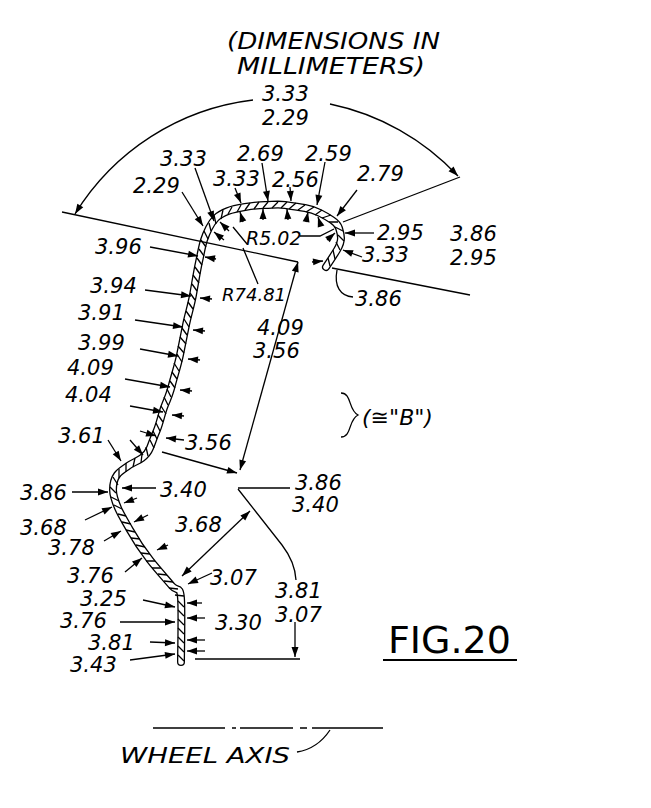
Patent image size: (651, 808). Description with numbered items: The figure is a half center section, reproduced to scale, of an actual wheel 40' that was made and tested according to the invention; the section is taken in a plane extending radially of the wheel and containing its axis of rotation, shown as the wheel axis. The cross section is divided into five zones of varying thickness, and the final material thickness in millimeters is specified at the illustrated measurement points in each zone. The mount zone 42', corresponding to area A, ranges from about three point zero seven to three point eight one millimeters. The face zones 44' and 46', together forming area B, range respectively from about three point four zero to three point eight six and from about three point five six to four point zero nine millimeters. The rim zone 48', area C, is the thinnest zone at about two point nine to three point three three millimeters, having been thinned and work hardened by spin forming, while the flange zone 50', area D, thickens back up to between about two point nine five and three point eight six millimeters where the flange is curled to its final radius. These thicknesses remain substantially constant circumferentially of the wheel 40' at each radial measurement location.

The wheel 40' is at (194, 432).
The mount zone 42' is at (307, 574).
The face zone 44' is at (248, 454).
The face zone 46' is at (287, 366).
The rim zone 48' is at (261, 163).
The flange zone 50' is at (442, 217).